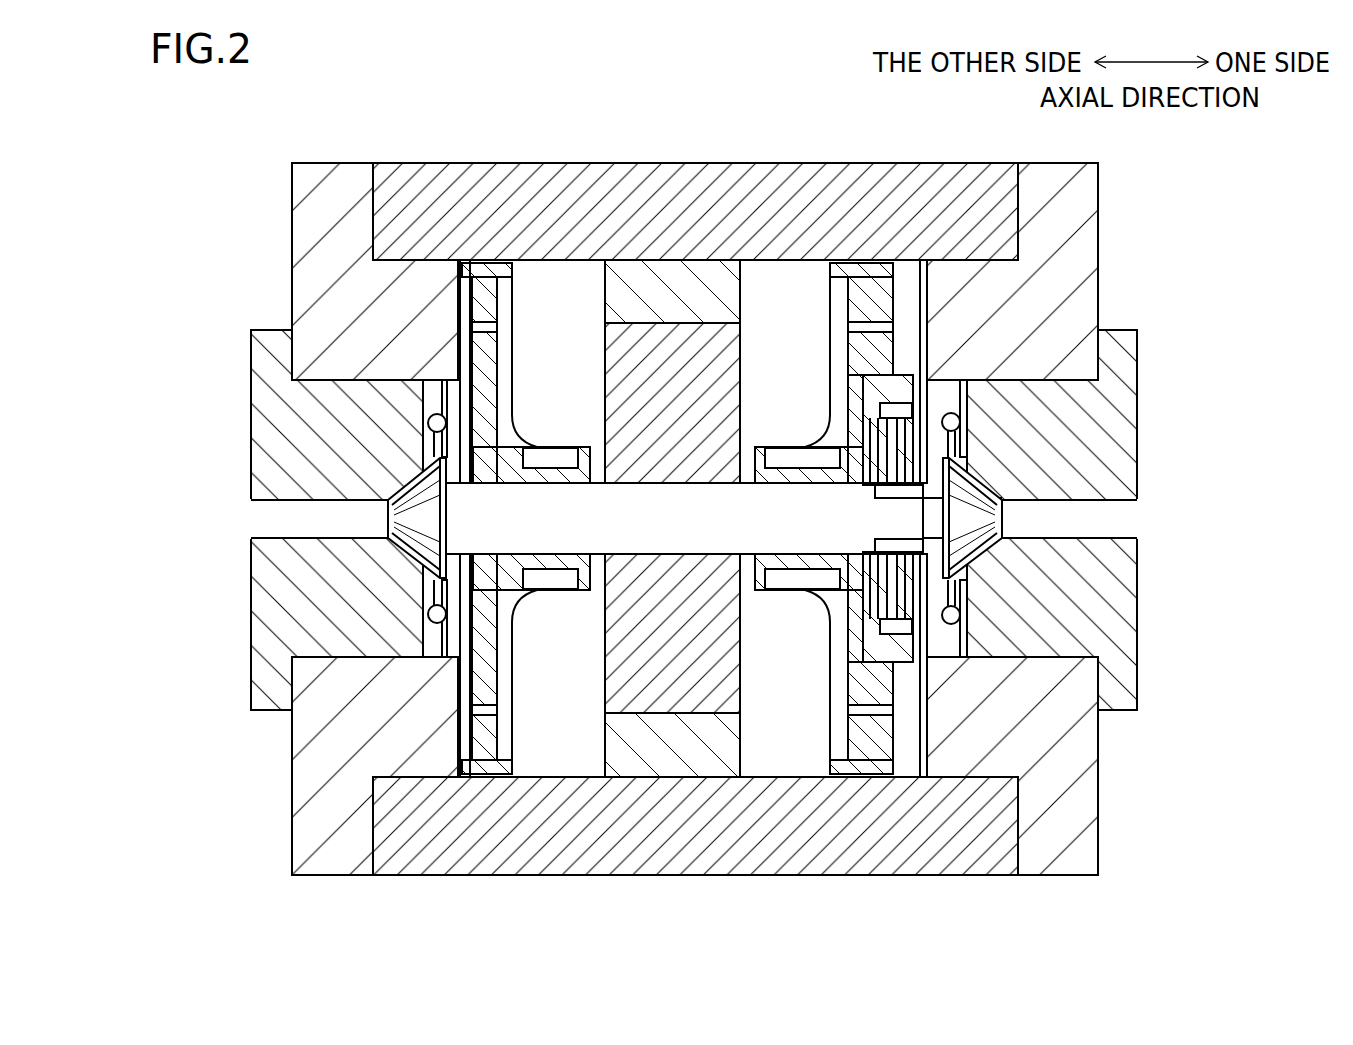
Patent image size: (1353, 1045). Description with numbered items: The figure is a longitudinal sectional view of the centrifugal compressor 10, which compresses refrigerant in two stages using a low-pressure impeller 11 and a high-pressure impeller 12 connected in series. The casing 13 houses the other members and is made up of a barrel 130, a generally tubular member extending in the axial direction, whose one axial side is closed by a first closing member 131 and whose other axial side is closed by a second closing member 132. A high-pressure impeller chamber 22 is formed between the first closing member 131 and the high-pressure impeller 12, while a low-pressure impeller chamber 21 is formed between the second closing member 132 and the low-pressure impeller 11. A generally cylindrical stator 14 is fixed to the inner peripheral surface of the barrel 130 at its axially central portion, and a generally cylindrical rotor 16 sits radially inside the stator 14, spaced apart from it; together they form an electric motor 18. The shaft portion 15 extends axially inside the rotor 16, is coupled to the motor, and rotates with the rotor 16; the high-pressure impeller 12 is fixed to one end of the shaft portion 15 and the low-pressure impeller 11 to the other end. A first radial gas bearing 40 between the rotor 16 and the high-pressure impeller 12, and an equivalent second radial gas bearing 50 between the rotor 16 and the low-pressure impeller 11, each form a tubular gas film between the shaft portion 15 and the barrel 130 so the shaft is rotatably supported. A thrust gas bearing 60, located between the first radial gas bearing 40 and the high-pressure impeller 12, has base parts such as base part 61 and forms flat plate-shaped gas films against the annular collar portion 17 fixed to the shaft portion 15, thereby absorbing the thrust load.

The centrifugal compressor 10 is at (182, 177).
The casing 13 is at (399, 160).
The barrel 130 is at (333, 160).
The second closing member 132 is at (260, 381).
The first closing member 131 is at (1137, 378).
The electric motor 18 is at (672, 406).
The rotor 16 is at (630, 415).
The stator 14 is at (705, 275).
The shaft portion 15 is at (661, 530).
The low-pressure impeller 11 is at (432, 560).
The high-pressure impeller 12 is at (990, 562).
The low-pressure impeller chamber 21 is at (381, 518).
The high-pressure impeller chamber 22 is at (1012, 518).
The second radial gas bearing 50 is at (545, 600).
The first radial gas bearing 40 is at (799, 600).
The thrust gas bearing 60 is at (1055, 657).
The base part 61 is at (905, 437).
The collar portion 17 is at (893, 578).